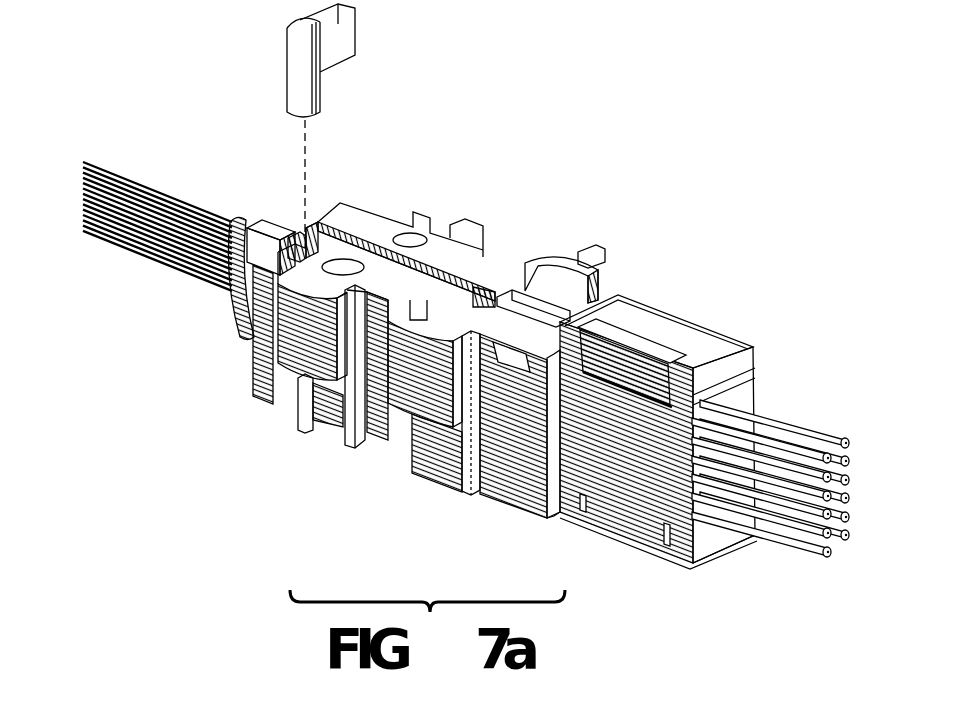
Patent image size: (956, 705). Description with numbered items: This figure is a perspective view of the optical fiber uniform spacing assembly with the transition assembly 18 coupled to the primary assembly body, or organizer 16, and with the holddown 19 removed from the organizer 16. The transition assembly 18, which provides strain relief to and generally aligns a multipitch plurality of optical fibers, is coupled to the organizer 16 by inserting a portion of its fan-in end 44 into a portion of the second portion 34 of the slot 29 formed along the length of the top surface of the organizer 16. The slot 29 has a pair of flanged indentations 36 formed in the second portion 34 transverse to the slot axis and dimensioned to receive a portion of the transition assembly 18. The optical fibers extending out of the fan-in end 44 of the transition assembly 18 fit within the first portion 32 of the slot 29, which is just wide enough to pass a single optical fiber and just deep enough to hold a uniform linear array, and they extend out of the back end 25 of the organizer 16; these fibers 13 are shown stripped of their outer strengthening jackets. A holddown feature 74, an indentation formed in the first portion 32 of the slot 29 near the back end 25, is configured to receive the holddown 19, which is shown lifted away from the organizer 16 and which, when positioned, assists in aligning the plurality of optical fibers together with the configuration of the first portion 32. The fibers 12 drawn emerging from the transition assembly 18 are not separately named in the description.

The optical fibers 12 is at (775, 440).
The optical fibers 13 is at (120, 190).
The organizer 16 is at (415, 470).
The transition assembly 18 is at (597, 530).
The holddown 19 is at (293, 60).
The back end 25 is at (248, 362).
The slot 29 is at (432, 270).
The first portion 32 is at (377, 225).
The second portion 34 is at (580, 257).
The flanged indentations 36 is at (558, 300).
The fan-in end 44 is at (500, 270).
The holddown feature 74 is at (297, 240).